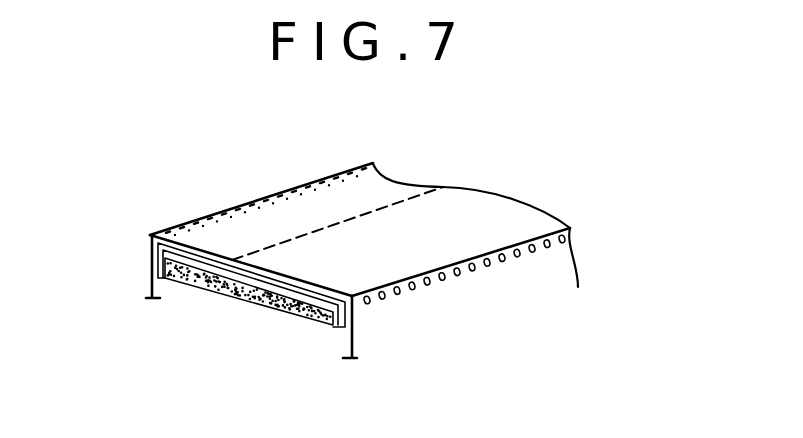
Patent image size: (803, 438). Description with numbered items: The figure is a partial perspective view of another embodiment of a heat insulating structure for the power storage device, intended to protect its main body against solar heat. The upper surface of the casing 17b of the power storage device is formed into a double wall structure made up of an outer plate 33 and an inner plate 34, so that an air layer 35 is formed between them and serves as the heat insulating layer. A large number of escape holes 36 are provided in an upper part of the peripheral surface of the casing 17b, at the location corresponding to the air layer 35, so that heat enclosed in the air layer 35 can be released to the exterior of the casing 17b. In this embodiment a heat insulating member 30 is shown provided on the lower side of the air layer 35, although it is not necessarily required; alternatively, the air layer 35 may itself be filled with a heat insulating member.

The casing 17b is at (277, 193).
The heat insulating member 30 is at (198, 282).
The outer plate 33 is at (390, 263).
The inner plate 34 is at (292, 312).
The air layer 35 is at (262, 288).
The escape holes 36 is at (518, 257).